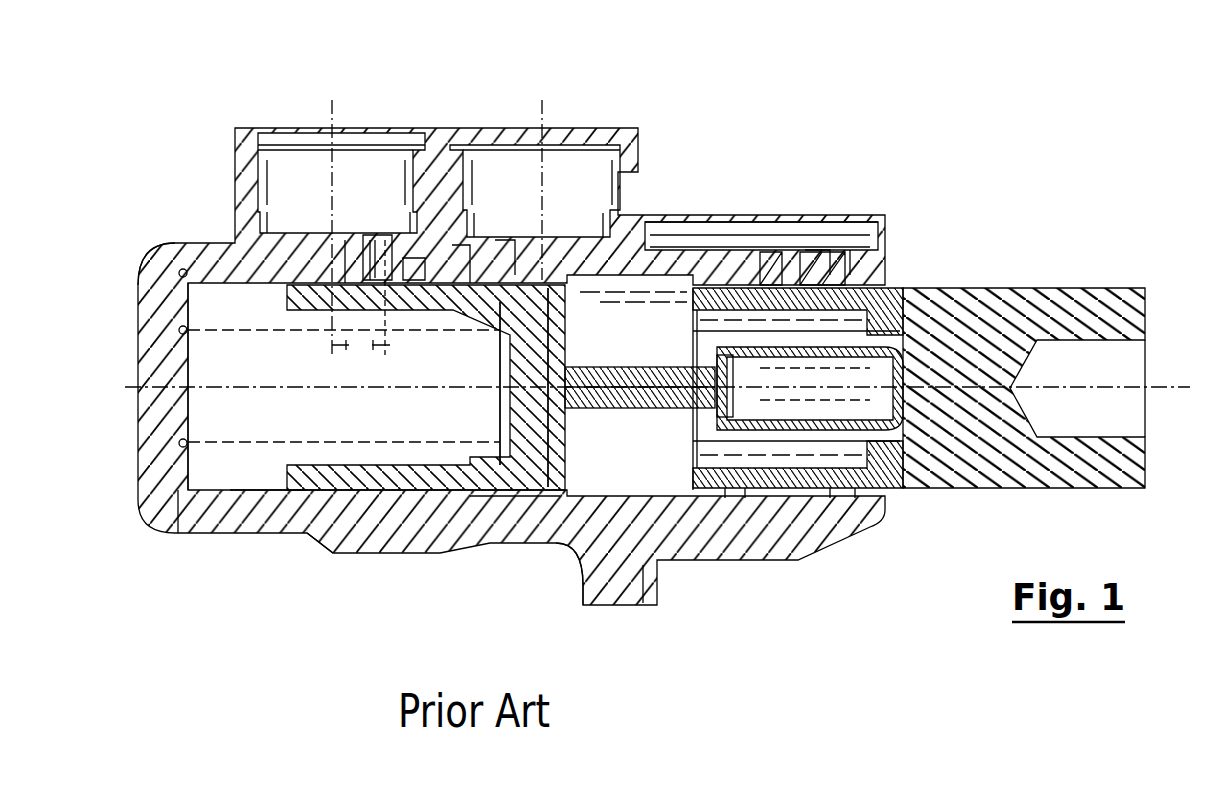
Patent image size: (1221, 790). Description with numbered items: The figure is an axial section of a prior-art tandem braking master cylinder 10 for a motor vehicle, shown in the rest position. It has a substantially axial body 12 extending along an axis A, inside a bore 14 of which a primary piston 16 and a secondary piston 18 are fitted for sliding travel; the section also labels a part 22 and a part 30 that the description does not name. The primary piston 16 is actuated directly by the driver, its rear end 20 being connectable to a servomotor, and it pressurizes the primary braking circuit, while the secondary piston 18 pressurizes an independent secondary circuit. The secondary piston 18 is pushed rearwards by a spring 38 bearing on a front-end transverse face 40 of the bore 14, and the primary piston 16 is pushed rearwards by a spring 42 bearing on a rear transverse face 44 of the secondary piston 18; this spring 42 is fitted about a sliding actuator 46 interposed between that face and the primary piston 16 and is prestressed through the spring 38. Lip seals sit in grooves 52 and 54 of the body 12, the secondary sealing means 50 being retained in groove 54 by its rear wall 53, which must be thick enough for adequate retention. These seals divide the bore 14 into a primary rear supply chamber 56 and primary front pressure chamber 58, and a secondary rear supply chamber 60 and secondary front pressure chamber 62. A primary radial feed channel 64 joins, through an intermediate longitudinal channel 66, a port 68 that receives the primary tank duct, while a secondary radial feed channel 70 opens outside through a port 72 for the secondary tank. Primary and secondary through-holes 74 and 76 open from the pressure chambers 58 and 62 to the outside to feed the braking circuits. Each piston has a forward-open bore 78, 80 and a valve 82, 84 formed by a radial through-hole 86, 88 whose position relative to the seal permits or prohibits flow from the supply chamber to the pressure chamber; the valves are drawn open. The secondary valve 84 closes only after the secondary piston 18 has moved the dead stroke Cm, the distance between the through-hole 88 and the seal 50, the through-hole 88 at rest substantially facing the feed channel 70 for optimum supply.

The braking master cylinder 10 is at (892, 112).
The body 12 is at (213, 252).
The bore 14 is at (173, 300).
The primary piston 16 is at (925, 472).
The secondary piston 18 is at (498, 500).
The rear end 20 is at (1145, 460).
The secondary piston 22 is at (690, 307).
The piston cup 30 is at (272, 318).
The spring 38 is at (232, 450).
The front-end transverse face 40 is at (778, 285).
The spring 42 is at (605, 460).
The rear transverse face 44 is at (553, 540).
The sliding actuator 46 is at (655, 410).
The secondary sealing means 50 is at (392, 235).
The groove 52 is at (770, 252).
The rear wall 53 is at (402, 383).
The groove 54 is at (385, 265).
The primary rear supply chamber 56 is at (840, 250).
The primary front pressure chamber 58 is at (700, 258).
The secondary rear supply chamber 60 is at (452, 245).
The secondary front pressure chamber 62 is at (228, 312).
The primary radial feed channel 64 is at (812, 255).
The intermediate longitudinal channel 66 is at (678, 218).
The port 68 is at (598, 145).
The secondary radial feed channel 70 is at (437, 240).
The port 72 is at (258, 133).
The primary through-hole 74 is at (503, 235).
The secondary through-hole 76 is at (148, 262).
The bore 78 is at (733, 488).
The bore 80 is at (308, 555).
The valve 82 is at (770, 345).
The valve 84 is at (390, 332).
The radial through-hole 86 is at (760, 320).
The radial through-hole 88 is at (398, 345).
The axis A is at (1190, 387).
The dead stroke Cm is at (361, 313).